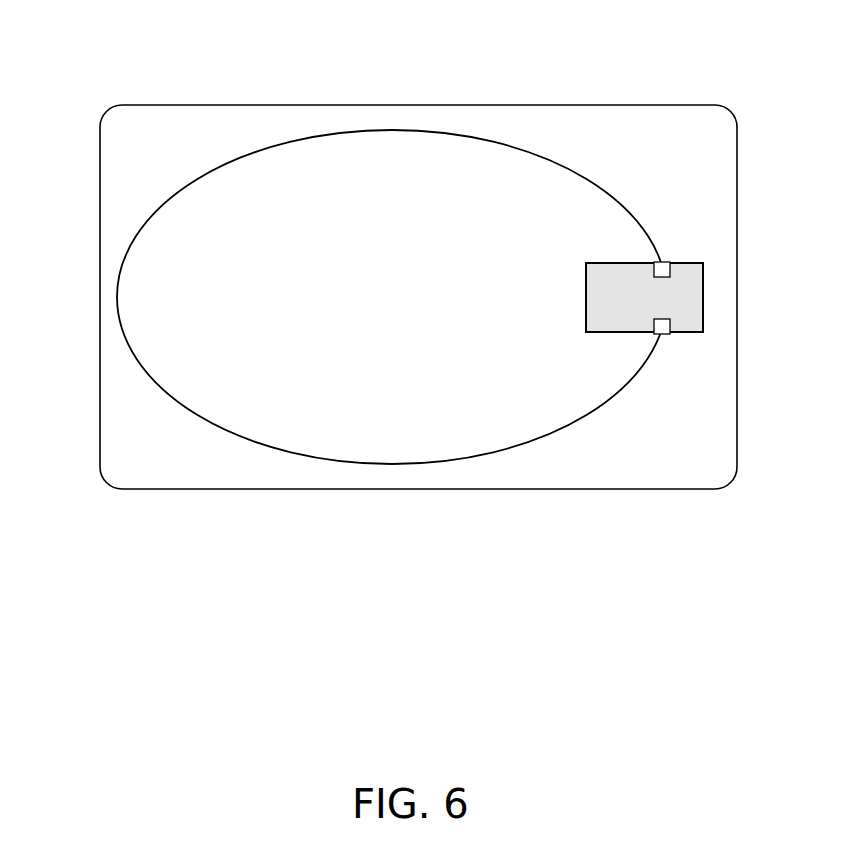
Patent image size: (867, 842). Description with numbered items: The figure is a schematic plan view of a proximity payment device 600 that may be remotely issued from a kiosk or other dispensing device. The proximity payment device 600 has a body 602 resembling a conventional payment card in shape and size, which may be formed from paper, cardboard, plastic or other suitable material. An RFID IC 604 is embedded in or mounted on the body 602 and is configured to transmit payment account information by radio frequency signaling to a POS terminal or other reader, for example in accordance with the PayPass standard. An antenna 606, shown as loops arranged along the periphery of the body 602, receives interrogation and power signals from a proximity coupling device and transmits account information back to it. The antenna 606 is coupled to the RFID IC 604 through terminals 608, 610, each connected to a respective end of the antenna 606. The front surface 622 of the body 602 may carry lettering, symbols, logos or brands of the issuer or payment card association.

The proximity payment device 600 is at (70, 20).
The body 602 is at (194, 151).
The RFID IC 604 is at (598, 332).
The antenna 606 is at (250, 460).
The terminal 608 is at (666, 255).
The terminal 610 is at (664, 349).
The front surface 622 is at (148, 446).